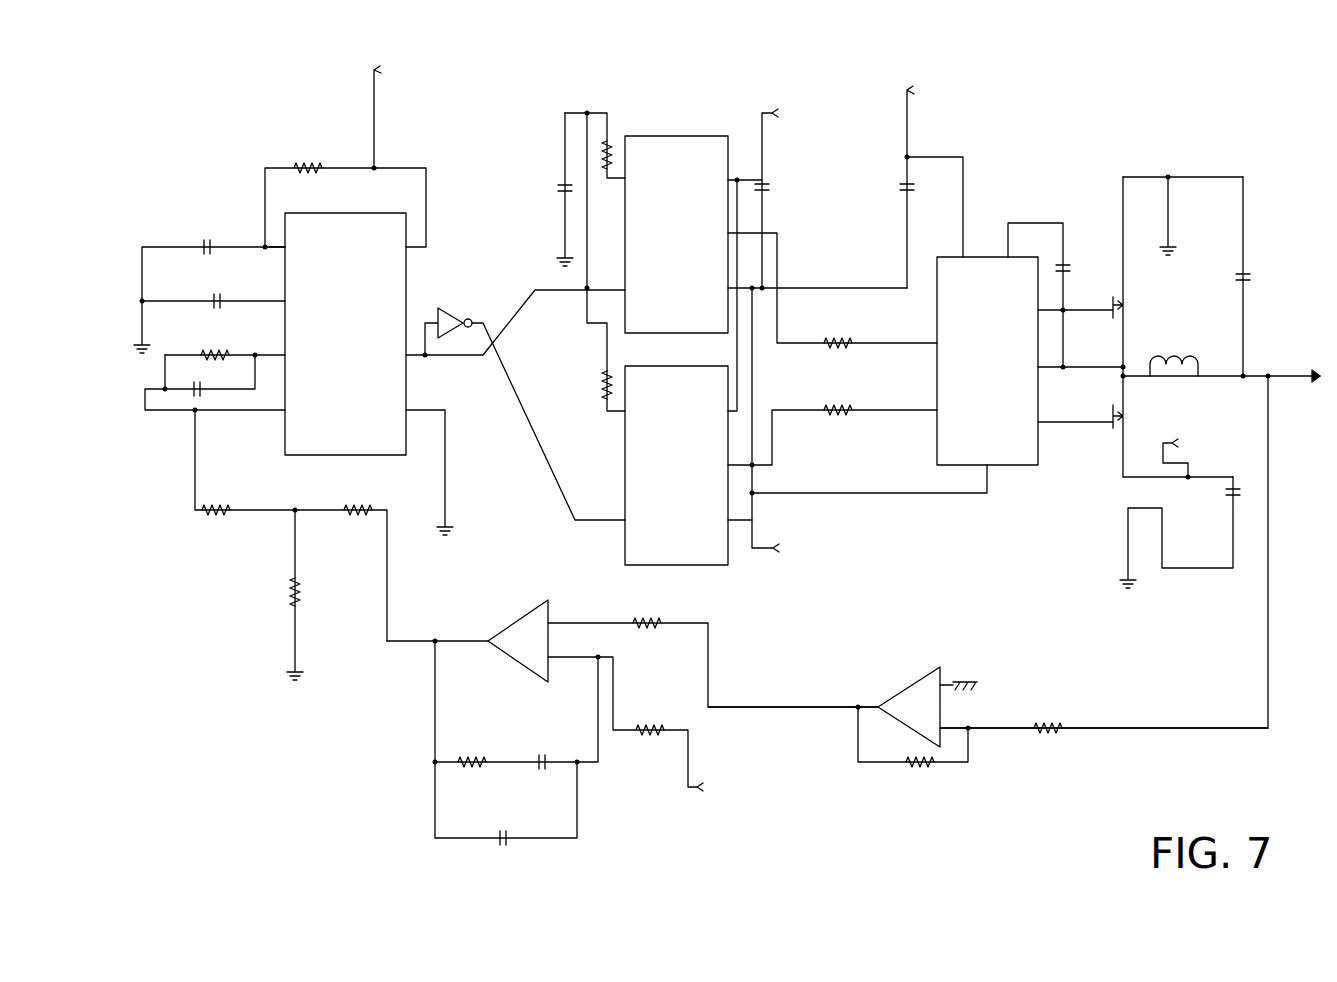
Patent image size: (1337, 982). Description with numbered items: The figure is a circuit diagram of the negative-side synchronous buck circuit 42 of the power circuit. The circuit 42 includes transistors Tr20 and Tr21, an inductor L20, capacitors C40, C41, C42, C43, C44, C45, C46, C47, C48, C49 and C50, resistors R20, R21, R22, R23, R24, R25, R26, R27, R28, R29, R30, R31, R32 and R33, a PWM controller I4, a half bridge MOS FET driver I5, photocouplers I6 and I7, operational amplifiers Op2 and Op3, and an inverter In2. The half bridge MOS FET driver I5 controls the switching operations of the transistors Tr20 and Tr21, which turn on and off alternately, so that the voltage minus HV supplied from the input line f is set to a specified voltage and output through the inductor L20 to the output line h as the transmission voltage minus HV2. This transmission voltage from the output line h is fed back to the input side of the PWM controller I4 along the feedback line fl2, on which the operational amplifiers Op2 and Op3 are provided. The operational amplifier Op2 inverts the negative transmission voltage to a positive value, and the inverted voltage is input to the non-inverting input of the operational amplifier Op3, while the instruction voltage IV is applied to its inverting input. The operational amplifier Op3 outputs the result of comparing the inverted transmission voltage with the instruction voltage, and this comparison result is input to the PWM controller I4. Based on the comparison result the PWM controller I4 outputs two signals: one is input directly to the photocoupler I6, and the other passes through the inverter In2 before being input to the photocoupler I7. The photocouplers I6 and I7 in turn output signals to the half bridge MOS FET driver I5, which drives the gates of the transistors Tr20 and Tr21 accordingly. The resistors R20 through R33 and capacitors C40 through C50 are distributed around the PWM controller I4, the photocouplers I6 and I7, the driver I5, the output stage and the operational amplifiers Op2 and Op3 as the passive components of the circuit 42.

The negative-side synchronous buck circuit 42 is at (745, 86).
The PWM controller I4 is at (333, 213).
The half bridge MOS FET driver I5 is at (980, 257).
The photocoupler I6 is at (673, 136).
The photocoupler I7 is at (625, 544).
The inverter In2 is at (450, 308).
The resistor R20 is at (298, 168).
The resistor R21 is at (224, 354).
The resistor R22 is at (607, 140).
The resistor R23 is at (601, 373).
The resistor R24 is at (846, 344).
The resistor R25 is at (846, 411).
The resistor R26 is at (1046, 726).
The resistor R27 is at (926, 766).
The resistor R28 is at (651, 630).
The resistor R29 is at (651, 737).
The resistor R30 is at (481, 757).
The resistor R31 is at (361, 525).
The resistor R32 is at (290, 596).
The resistor R33 is at (223, 525).
The capacitor C40 is at (213, 235).
The capacitor C41 is at (208, 310).
The capacitor C42 is at (201, 398).
The capacitor C43 is at (556, 201).
The capacitor C44 is at (767, 189).
The capacitor C45 is at (900, 197).
The capacitor C46 is at (1058, 255).
The capacitor C47 is at (1250, 270).
The capacitor C48 is at (1225, 496).
The capacitor C49 is at (549, 757).
The capacitor C50 is at (508, 832).
The transistor Tr20 is at (1110, 298).
The transistor Tr21 is at (1107, 430).
The inductor L20 is at (1178, 352).
The operational amplifier Op2 is at (898, 676).
The operational amplifier Op3 is at (521, 614).
The feedback line fl2 is at (797, 705).
The input line f is at (1162, 442).
The output line h is at (1291, 384).